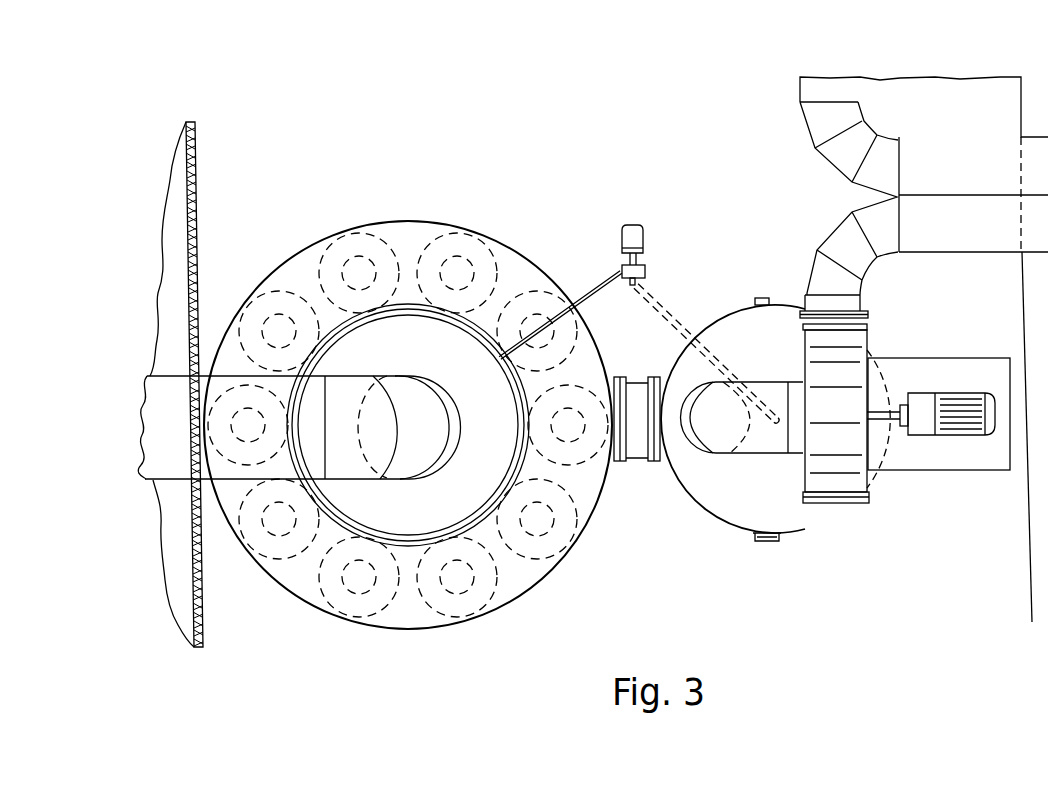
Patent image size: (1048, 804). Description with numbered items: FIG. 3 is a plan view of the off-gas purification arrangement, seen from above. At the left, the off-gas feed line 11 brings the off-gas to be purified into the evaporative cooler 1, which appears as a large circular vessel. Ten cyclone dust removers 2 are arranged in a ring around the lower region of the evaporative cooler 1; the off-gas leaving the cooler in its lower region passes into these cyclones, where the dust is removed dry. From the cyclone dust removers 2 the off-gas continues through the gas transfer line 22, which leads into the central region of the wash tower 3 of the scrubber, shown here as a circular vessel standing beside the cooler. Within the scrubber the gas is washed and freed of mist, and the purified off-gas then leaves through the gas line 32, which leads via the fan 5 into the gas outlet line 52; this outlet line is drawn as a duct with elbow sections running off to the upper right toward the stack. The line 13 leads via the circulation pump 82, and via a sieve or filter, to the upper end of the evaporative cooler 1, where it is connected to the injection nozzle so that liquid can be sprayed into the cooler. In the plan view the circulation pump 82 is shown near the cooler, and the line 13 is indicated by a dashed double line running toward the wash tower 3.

The evaporative cooler 1 is at (408, 425).
The cyclone dust remover 2 is at (352, 234).
The wash tower 3 is at (728, 308).
The fan 5 is at (803, 362).
The off-gas feed line 11 is at (147, 390).
The line 13 is at (662, 317).
The gas transfer line 22 is at (638, 452).
The gas line 32 is at (727, 442).
The gas outlet line 52 is at (840, 237).
The circulation pump 82 is at (645, 272).